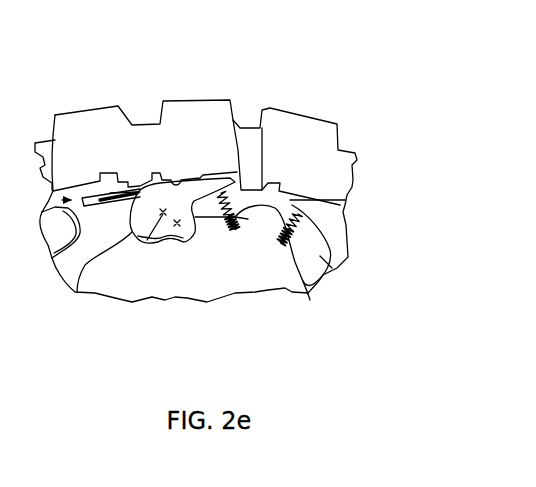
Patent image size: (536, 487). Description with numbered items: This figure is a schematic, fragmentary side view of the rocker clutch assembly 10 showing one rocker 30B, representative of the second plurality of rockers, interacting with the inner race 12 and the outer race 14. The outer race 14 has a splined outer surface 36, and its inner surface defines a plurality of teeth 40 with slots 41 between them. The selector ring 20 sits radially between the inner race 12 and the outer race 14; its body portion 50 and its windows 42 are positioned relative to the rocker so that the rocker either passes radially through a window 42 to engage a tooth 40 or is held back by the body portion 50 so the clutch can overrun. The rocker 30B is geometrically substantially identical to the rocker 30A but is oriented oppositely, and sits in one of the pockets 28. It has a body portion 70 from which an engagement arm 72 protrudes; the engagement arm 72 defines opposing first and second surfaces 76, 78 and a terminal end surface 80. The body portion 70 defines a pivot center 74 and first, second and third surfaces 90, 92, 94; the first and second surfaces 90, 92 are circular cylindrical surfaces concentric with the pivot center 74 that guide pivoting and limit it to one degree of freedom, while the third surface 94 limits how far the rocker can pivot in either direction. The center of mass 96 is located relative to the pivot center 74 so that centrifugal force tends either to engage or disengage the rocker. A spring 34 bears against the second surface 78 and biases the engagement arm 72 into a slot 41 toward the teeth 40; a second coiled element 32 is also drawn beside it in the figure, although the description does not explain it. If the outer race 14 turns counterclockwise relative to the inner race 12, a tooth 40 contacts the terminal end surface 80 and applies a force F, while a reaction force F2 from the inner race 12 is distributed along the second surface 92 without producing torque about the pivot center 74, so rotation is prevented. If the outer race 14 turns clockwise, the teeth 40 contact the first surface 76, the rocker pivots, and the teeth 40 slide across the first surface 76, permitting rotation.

The rocker clutch assembly 10 is at (298, 39).
The inner race 12 is at (52, 191).
The outer race 14 is at (337, 160).
The selector ring 20 is at (127, 185).
The pockets 28 is at (177, 226).
The rocker 30A is at (310, 294).
The rocker 30B is at (140, 232).
The spring 32 is at (226, 236).
The spring 34 is at (240, 219).
The outer surface 36 is at (249, 121).
The teeth 40 is at (137, 175).
The slots 41 is at (205, 190).
The windows 42 is at (55, 143).
The body portion 50 is at (107, 174).
The body portion 70 is at (75, 292).
The engagement arm 72 is at (200, 186).
The pivot center 74 is at (223, 247).
The first surface 76 is at (215, 176).
The second surface 78 is at (214, 218).
The terminal end surface 80 is at (237, 181).
The first surface 90 is at (200, 222).
The second surface 92 is at (42, 213).
The third surface 94 is at (194, 243).
The center of mass 96 is at (150, 243).
The force F is at (238, 183).
The reaction force F2 is at (127, 230).